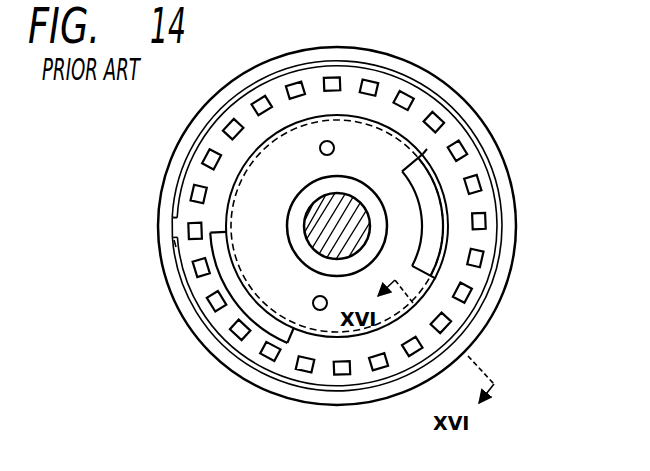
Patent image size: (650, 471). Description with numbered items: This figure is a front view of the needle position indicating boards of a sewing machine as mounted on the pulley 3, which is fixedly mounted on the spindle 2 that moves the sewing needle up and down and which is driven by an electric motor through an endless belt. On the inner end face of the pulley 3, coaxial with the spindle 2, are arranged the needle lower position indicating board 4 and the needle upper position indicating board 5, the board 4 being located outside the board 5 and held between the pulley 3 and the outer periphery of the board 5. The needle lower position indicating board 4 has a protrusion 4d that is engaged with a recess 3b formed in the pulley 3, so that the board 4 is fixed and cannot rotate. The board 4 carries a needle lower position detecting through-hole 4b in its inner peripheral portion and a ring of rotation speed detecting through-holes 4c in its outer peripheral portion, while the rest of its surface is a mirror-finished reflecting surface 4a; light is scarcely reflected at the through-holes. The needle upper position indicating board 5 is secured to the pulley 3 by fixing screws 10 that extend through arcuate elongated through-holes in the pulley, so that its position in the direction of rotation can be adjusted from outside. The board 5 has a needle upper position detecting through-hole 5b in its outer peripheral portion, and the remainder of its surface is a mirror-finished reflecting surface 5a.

The spindle 2 is at (360, 222).
The pulley 3 is at (171, 165).
The recess 3b is at (178, 250).
The needle lower position indicating board 4 is at (229, 98).
The reflecting surface 4a is at (282, 108).
The needle lower position detecting through-hole 4b is at (230, 282).
The rotation speed detecting through-holes 4c is at (334, 78).
The protrusion 4d is at (176, 238).
The needle upper position indicating board 5 is at (404, 124).
The reflecting surface 5a is at (397, 160).
The needle upper position detecting through-hole 5b is at (438, 213).
The fixing screws 10 is at (315, 297).